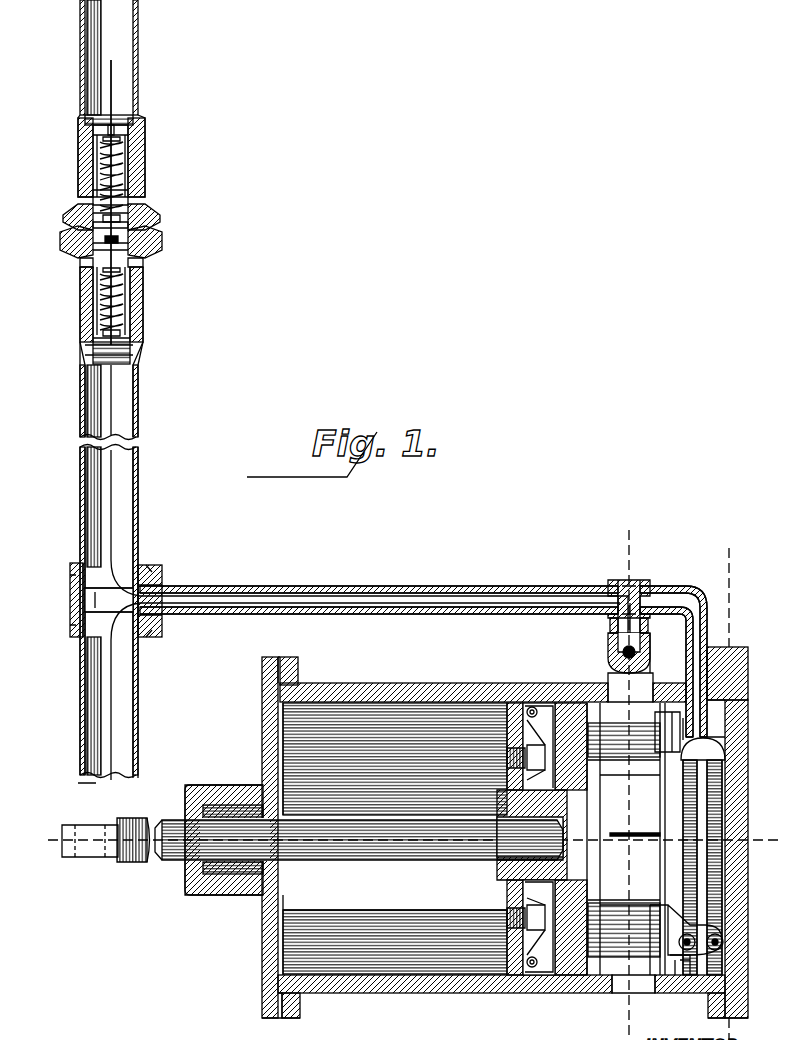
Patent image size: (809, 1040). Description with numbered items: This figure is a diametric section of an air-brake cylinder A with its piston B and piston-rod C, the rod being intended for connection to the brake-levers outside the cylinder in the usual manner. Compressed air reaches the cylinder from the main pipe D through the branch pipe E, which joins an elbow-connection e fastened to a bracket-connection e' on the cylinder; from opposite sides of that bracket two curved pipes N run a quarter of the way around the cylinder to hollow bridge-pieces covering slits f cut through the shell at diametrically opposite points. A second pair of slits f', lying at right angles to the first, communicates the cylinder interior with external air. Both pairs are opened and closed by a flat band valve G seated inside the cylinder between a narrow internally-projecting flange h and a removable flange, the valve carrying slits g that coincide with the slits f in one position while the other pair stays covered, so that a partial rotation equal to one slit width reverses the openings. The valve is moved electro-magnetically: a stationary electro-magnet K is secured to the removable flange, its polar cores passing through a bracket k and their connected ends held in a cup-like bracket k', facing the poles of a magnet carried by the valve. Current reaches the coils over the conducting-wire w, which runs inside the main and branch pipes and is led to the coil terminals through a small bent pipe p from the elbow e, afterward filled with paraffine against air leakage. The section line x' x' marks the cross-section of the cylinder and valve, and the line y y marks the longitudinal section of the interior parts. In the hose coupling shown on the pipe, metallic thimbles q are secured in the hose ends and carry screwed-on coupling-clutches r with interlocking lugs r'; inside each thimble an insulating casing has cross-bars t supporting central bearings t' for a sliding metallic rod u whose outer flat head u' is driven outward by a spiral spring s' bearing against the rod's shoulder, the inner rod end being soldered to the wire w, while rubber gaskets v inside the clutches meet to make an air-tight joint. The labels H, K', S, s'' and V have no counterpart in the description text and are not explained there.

The cylinder A is at (466, 832).
The piston B is at (497, 880).
The piston-rod C is at (400, 850).
The main pipe D is at (116, 391).
The branch pipe E is at (379, 590).
The valve G is at (626, 839).
The valve casing H is at (118, 236).
The stationary electro-magnet K is at (699, 867).
The dome K' is at (703, 748).
The curved pipe N is at (608, 653).
The spring S is at (137, 153).
The spiral spring s' is at (136, 283).
The spring seat s'' is at (86, 153).
The valve V is at (128, 202).
The elbow-connection e is at (632, 598).
The bracket-connection e' is at (661, 653).
The slit f is at (630, 687).
The slit f' is at (633, 984).
The slit g is at (635, 844).
The internally-projecting flange h is at (625, 846).
The bracket k is at (686, 940).
The cup-like bracket k' is at (669, 732).
The bent pipe p is at (672, 593).
The metallic thimble q is at (128, 270).
The coupling-clutch r is at (151, 233).
The interlocking lug r' is at (75, 256).
The ring r'' is at (166, 249).
The cross-bar t is at (110, 202).
The central bearing t' is at (143, 181).
The sliding metallic rod u is at (135, 325).
The flat head u' is at (150, 214).
The gasket v is at (70, 232).
The conducting-wire w is at (493, 622).
The section line x' is at (627, 775).
The section line y is at (408, 837).